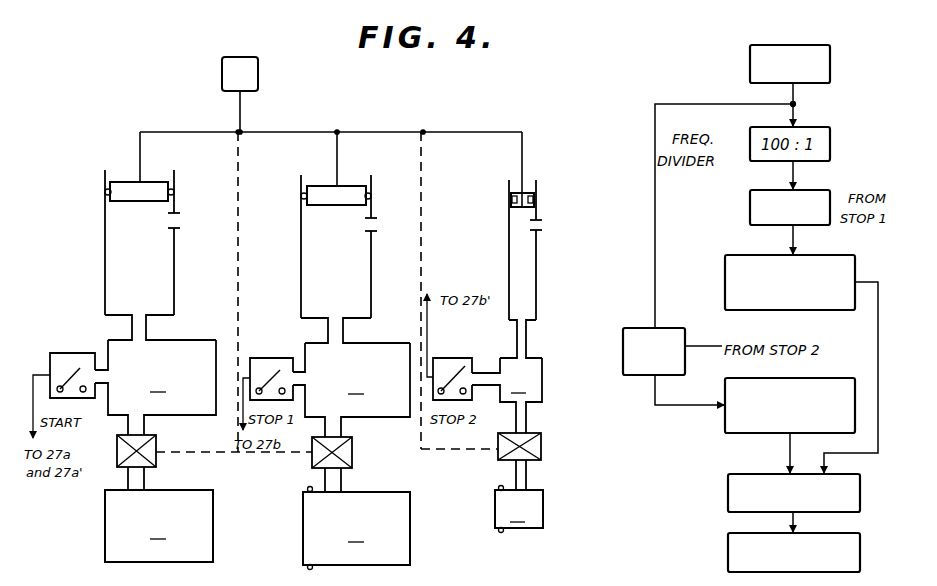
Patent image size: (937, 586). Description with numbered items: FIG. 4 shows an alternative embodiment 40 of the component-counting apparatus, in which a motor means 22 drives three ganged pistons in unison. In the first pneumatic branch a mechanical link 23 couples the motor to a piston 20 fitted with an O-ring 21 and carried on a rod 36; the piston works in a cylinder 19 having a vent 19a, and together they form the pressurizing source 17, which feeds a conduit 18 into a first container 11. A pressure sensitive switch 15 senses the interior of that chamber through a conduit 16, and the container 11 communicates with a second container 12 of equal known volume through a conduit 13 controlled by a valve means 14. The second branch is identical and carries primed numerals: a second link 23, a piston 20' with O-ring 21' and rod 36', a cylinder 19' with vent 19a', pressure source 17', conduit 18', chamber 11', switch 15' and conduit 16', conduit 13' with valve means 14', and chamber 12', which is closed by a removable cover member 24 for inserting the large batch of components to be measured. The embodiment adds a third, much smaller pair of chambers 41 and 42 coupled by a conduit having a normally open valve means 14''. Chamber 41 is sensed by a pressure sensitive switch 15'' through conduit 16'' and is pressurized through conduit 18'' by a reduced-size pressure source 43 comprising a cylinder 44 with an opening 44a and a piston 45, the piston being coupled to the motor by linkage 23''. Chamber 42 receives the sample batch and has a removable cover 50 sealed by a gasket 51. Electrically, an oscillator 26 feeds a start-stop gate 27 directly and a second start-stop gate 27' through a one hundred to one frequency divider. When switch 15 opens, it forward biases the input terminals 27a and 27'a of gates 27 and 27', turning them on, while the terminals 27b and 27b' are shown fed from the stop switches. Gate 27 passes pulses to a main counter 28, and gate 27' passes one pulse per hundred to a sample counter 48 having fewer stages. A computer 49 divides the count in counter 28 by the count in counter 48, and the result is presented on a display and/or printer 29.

The alternative embodiment 40 is at (90, 91).
The motor means 22 is at (260, 76).
The mechanical link 23 is at (331, 138).
The linkage 23'' is at (484, 162).
The piston 20 is at (155, 174).
The piston 20' is at (317, 177).
The O-ring 21 is at (113, 195).
The O-ring 21' is at (313, 210).
The piston rod 36 is at (215, 198).
The piston rod 36' is at (403, 196).
The cylinder 19 is at (160, 242).
The cylinder 19' is at (357, 246).
The vent 19a is at (198, 233).
The vent 19a' is at (397, 237).
The conduit 18 is at (160, 327).
The conduit 18' is at (355, 324).
The conduit 18'' is at (539, 339).
The pressurizing source 17 is at (140, 243).
The pressure source 17' is at (338, 246).
The container 11 is at (164, 377).
The chamber 11' is at (357, 378).
The pressure sensitive switch 15 is at (56, 356).
The pressure sensitive switch 15' is at (263, 353).
The pressure sensitive switch 15'' is at (449, 354).
The conduit 16 is at (76, 360).
The conduit 16' is at (277, 362).
The conduit 16'' is at (467, 367).
The conduit 13 is at (157, 446).
The conduit 13' is at (355, 446).
The valve means 14 is at (164, 472).
The valve means 14' is at (361, 472).
The valve means 14'' is at (544, 461).
The container 12 is at (140, 526).
The chamber 12' is at (433, 545).
The cover member 24 is at (303, 523).
The piston 45 is at (509, 214).
The cylinder opening 44a is at (538, 226).
The pressure source 43 is at (508, 262).
The cylinder 44 is at (538, 276).
The chamber 41 is at (545, 384).
The chamber 42 is at (545, 512).
The cover 50 is at (495, 502).
The gasket 51 is at (504, 533).
The oscillator 26 is at (748, 62).
The start-stop gate 27' is at (763, 199).
The input terminal 27'a is at (708, 213).
The gate input from stop 1 27b' is at (857, 182).
The sample counter 48 is at (725, 272).
The start-stop gate 27 is at (664, 339).
The input terminal 27a is at (632, 327).
The gate output 27b is at (689, 376).
The counter 28 is at (725, 431).
The computer 49 is at (728, 498).
The display and/or printer 29 is at (728, 550).